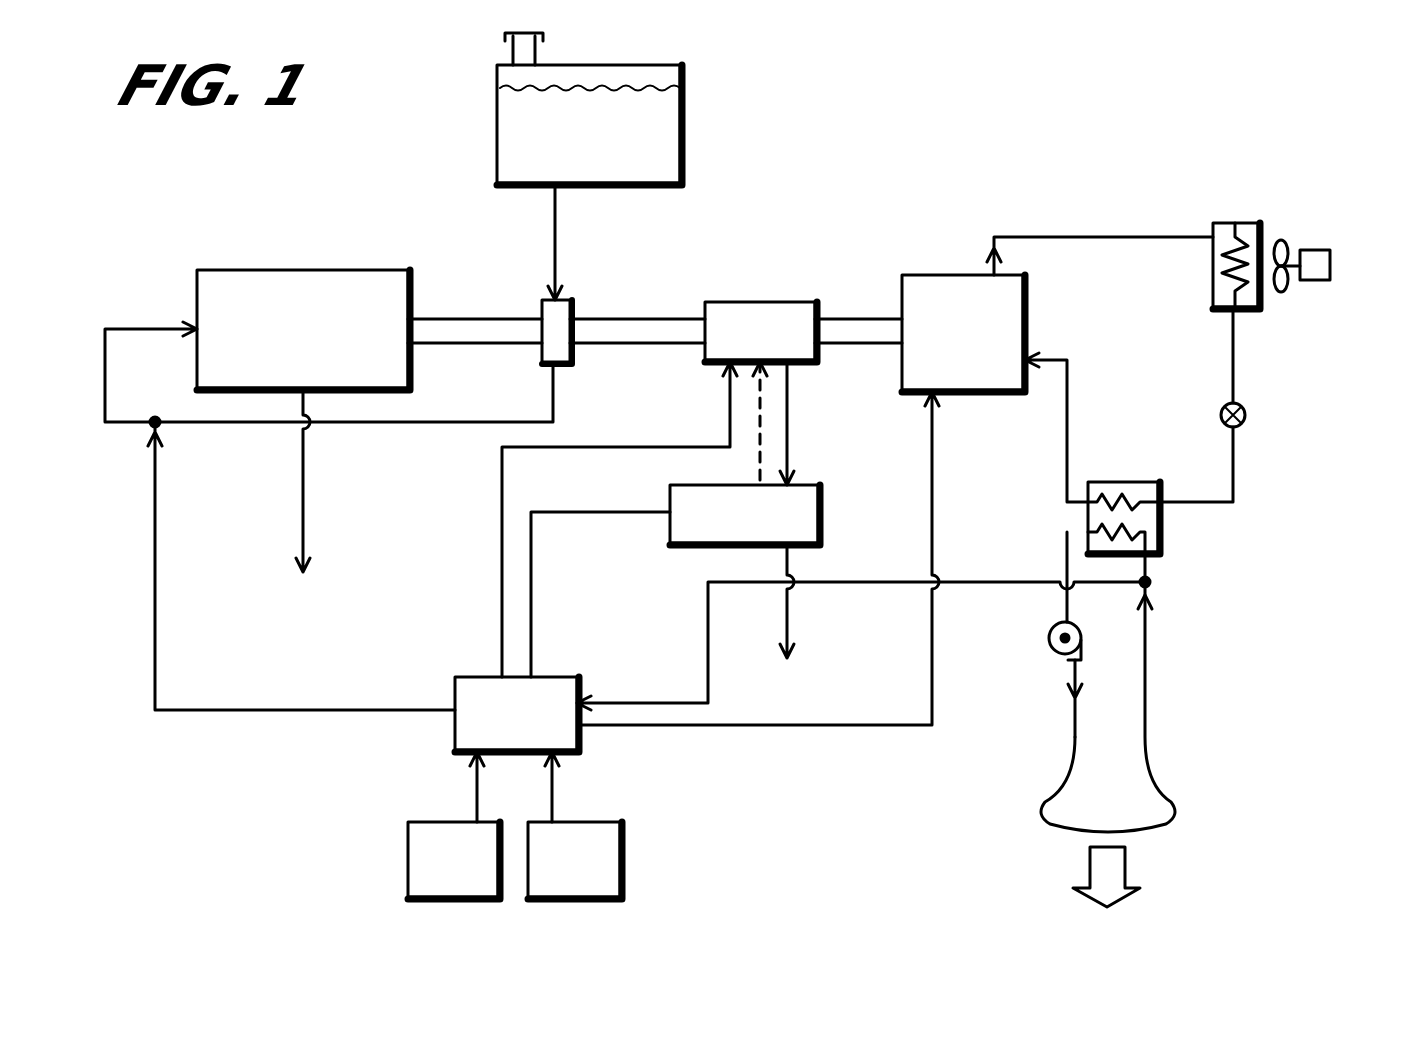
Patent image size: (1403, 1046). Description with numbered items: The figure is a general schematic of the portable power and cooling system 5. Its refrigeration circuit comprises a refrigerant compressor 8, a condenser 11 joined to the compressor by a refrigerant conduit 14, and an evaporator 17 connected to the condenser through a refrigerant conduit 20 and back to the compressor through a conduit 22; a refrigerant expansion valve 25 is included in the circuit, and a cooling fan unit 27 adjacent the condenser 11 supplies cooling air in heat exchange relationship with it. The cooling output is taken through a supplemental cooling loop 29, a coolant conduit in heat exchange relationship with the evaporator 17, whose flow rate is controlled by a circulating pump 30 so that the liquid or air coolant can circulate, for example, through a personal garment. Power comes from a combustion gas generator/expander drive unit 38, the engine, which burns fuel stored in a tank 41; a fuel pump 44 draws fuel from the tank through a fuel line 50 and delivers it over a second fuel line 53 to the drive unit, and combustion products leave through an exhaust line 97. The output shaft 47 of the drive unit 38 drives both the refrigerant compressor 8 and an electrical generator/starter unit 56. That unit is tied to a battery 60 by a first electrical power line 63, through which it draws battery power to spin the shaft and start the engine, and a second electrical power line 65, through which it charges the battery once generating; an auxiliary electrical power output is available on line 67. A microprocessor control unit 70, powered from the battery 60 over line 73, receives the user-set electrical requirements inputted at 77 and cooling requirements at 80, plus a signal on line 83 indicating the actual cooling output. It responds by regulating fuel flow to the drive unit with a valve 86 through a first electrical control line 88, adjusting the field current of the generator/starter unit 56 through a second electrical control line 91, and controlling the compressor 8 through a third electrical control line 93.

The cooling system 5 is at (790, 222).
The refrigerant compressor 8 is at (963, 333).
The condenser 11 is at (1238, 230).
The refrigerant conduit 14 is at (1070, 237).
The evaporator 17 is at (1162, 521).
The refrigerant conduit 20 is at (1240, 386).
The conduit 22 is at (1063, 433).
The refrigerant expansion valve 25 is at (1247, 417).
The cooling fan unit 27 is at (1334, 249).
The supplemental cooling loop 29 is at (1147, 690).
The circulating pump 30 is at (1050, 652).
The combustion gas generator/expander drive unit 38 is at (303, 330).
The tank 41 is at (589, 109).
The fuel pump 44 is at (566, 312).
The output shaft 47 is at (462, 332).
The fuel line 50 is at (556, 219).
The second fuel line 53 is at (437, 426).
The electrical generator/starter unit 56 is at (761, 332).
The battery 60 is at (745, 515).
The first electrical power line 63 is at (764, 462).
The second electrical power line 65 is at (790, 436).
The line 67 is at (790, 626).
The microprocessor control unit 70 is at (517, 714).
The line 73 is at (534, 606).
The electrical requirements input 77 is at (454, 825).
The cooling requirements input 80 is at (575, 825).
The line 83 is at (710, 694).
The valve 86 is at (172, 434).
The first electrical control line 88 is at (156, 630).
The second electrical control line 91 is at (584, 449).
The third electrical control line 93 is at (880, 727).
The exhaust line 97 is at (306, 501).